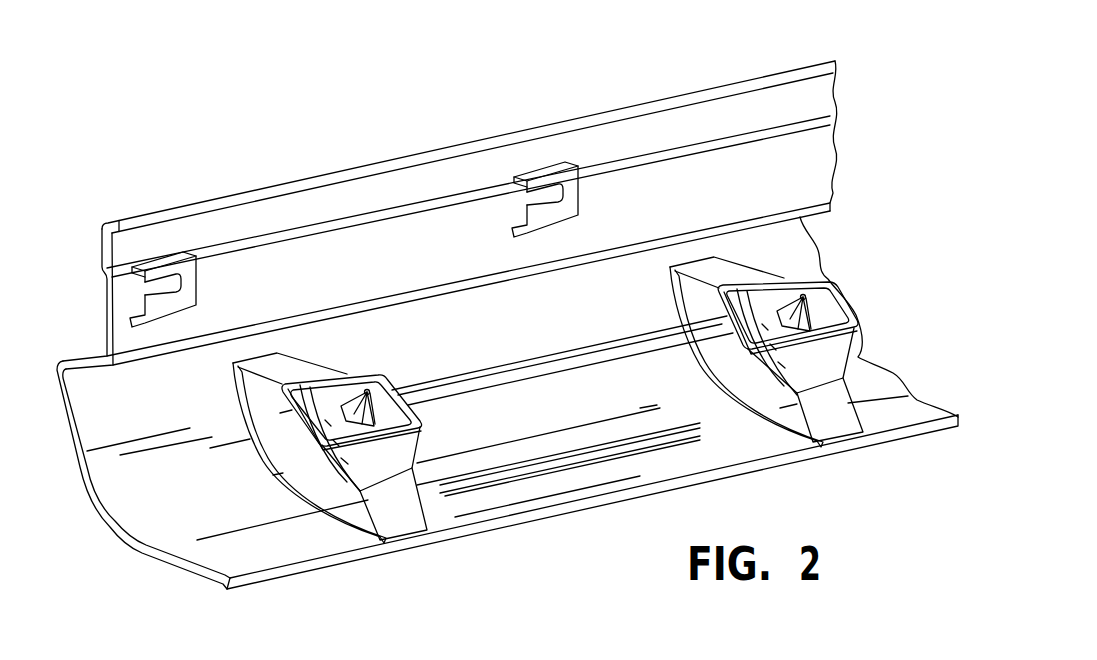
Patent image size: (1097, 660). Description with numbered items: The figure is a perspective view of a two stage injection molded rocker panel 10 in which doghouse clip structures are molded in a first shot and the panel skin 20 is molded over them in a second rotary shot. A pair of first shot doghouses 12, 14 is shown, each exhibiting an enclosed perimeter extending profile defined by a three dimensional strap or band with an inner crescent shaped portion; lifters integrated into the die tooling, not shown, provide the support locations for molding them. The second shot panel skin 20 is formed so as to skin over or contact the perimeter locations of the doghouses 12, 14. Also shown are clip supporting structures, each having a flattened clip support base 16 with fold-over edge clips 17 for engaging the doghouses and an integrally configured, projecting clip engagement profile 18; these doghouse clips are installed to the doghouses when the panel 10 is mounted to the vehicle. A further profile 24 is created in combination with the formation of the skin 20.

The panel 10 is at (248, 157).
The doghouse 12 is at (583, 416).
The doghouse 14 is at (832, 413).
The clip support base 16 is at (388, 450).
The fold-over edge clips 17 is at (347, 481).
The clip engagement profile 18 is at (368, 390).
The panel skin 20 is at (126, 492).
The profile 24 is at (168, 260).